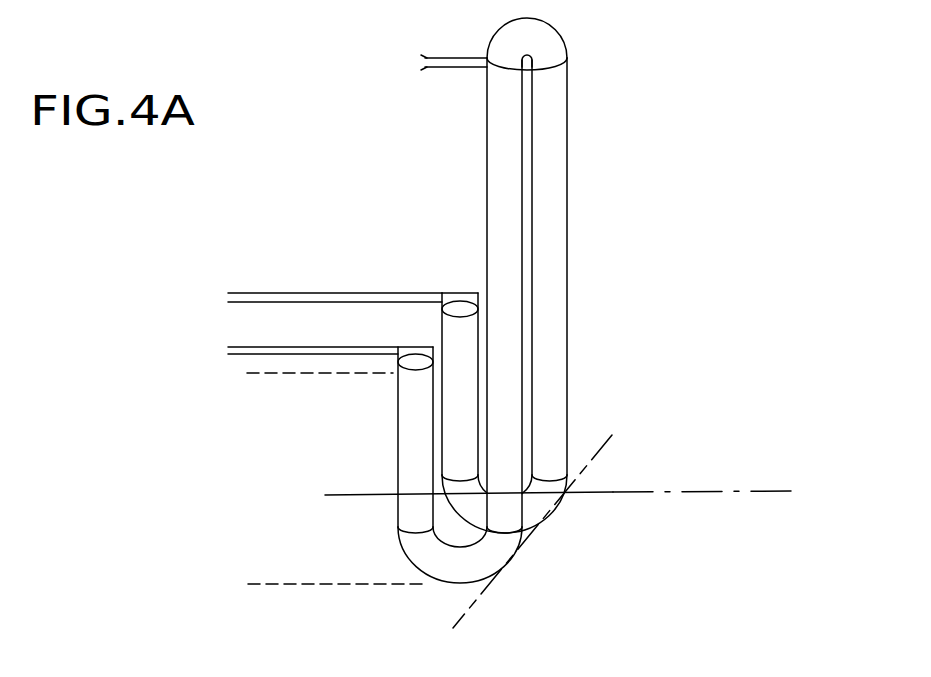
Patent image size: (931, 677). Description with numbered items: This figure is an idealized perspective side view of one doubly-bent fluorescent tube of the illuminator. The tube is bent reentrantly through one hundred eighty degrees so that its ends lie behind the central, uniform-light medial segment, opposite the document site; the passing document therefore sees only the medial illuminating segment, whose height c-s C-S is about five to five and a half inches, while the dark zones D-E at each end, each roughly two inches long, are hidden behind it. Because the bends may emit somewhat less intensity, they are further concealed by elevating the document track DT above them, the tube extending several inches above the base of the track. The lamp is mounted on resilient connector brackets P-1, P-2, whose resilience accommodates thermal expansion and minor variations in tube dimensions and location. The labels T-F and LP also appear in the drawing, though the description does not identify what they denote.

The connector bracket P-1 is at (242, 357).
The connector bracket P-2 is at (282, 293).
The tube fitting T-F is at (445, 268).
The lower pipe connection LP is at (427, 70).
The medial illuminating segment height C-S is at (567, 13).
The dark zones D-E is at (272, 373).
The document track DT is at (584, 531).